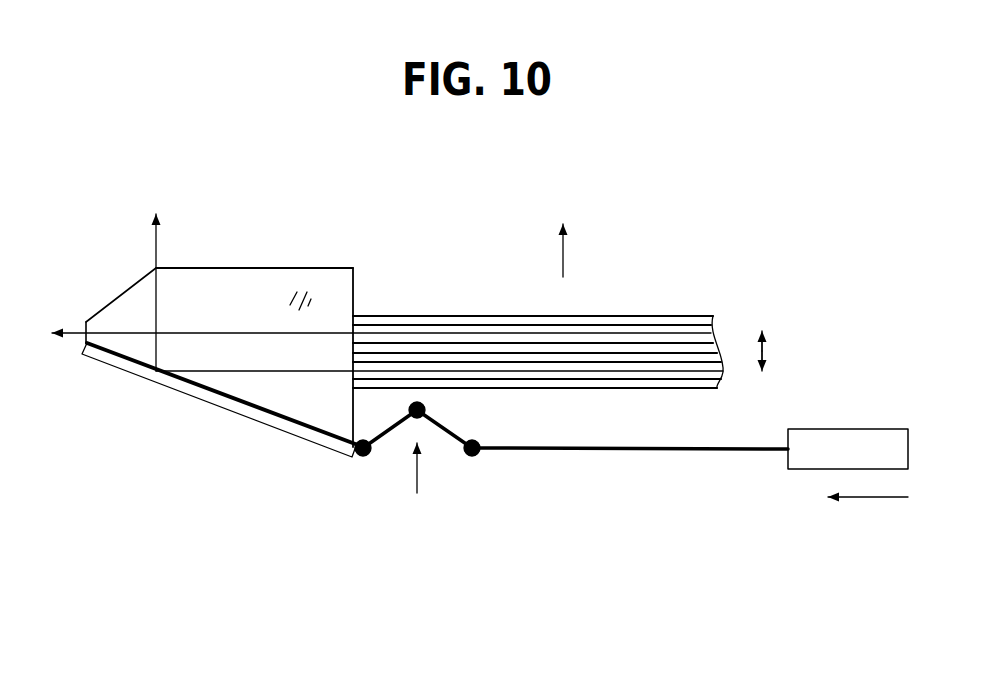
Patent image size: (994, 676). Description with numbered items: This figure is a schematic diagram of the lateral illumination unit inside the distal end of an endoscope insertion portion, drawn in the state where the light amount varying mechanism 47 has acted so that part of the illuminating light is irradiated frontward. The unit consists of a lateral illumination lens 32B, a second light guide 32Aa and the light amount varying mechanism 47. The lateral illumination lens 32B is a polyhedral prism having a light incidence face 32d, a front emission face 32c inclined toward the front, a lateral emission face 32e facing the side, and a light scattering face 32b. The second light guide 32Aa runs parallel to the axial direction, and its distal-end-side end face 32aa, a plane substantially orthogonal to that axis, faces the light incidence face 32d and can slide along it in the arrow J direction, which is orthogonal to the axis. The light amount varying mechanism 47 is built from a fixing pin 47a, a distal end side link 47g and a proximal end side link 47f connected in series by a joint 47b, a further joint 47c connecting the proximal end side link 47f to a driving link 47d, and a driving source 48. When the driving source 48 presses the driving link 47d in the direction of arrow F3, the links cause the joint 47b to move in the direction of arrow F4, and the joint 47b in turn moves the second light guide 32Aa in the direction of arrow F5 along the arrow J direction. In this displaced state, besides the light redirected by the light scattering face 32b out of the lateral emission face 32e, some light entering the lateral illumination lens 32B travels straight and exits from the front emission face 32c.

The lateral illumination lens 32B is at (288, 273).
The lateral emission face 32e is at (212, 262).
The front emission face 32c is at (80, 324).
The distal-end-side end face 32aa is at (348, 343).
The light incidence face 32d is at (364, 353).
The second light guide 32Aa is at (660, 323).
The light scattering face 32b is at (311, 420).
The light amount varying mechanism 47 is at (580, 507).
The fixing pin 47a is at (363, 457).
The distal end side link 47g is at (382, 438).
The joint 47b is at (422, 422).
The proximal end side link 47f is at (447, 435).
The joint 47c is at (522, 507).
The driving link 47d is at (703, 450).
The driving source 48 is at (803, 458).
The arrow F3 is at (870, 497).
The arrow F4 is at (419, 470).
The arrow F5 is at (563, 250).
The arrow J direction J is at (763, 349).